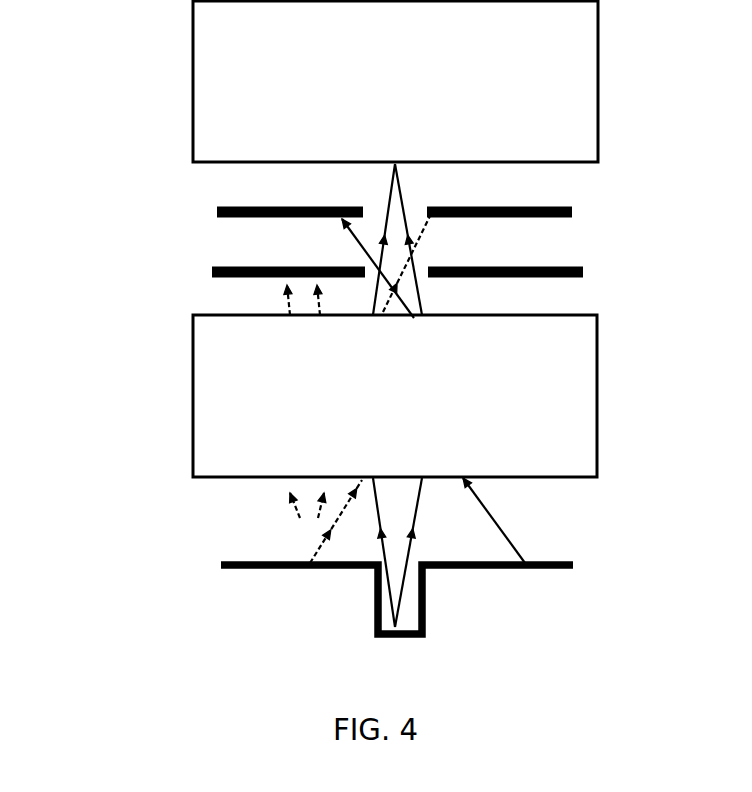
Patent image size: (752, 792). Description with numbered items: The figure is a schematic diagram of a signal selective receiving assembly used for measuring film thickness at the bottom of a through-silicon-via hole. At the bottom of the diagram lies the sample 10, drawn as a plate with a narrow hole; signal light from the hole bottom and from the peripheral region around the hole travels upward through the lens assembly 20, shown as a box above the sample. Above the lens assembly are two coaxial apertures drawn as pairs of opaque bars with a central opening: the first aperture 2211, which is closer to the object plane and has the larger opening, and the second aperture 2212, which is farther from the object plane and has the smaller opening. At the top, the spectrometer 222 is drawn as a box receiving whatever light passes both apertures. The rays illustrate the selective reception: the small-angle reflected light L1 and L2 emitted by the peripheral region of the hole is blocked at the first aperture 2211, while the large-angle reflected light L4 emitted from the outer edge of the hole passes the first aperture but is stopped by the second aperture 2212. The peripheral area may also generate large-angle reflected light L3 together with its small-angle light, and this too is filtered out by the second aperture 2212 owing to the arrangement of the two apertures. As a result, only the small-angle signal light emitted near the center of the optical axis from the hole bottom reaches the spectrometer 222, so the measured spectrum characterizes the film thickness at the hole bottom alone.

The spectrometer 222 is at (395, 81).
The lens assembly 20 is at (395, 396).
The second aperture 2212 is at (215, 211).
The first aperture 2211 is at (202, 275).
The sample 10 is at (455, 594).
The small-angle reflected light L1 is at (293, 495).
The small-angle reflected light L2 is at (310, 530).
The large-angle reflected light L3 is at (337, 532).
The large-angle reflected light L4 is at (496, 524).